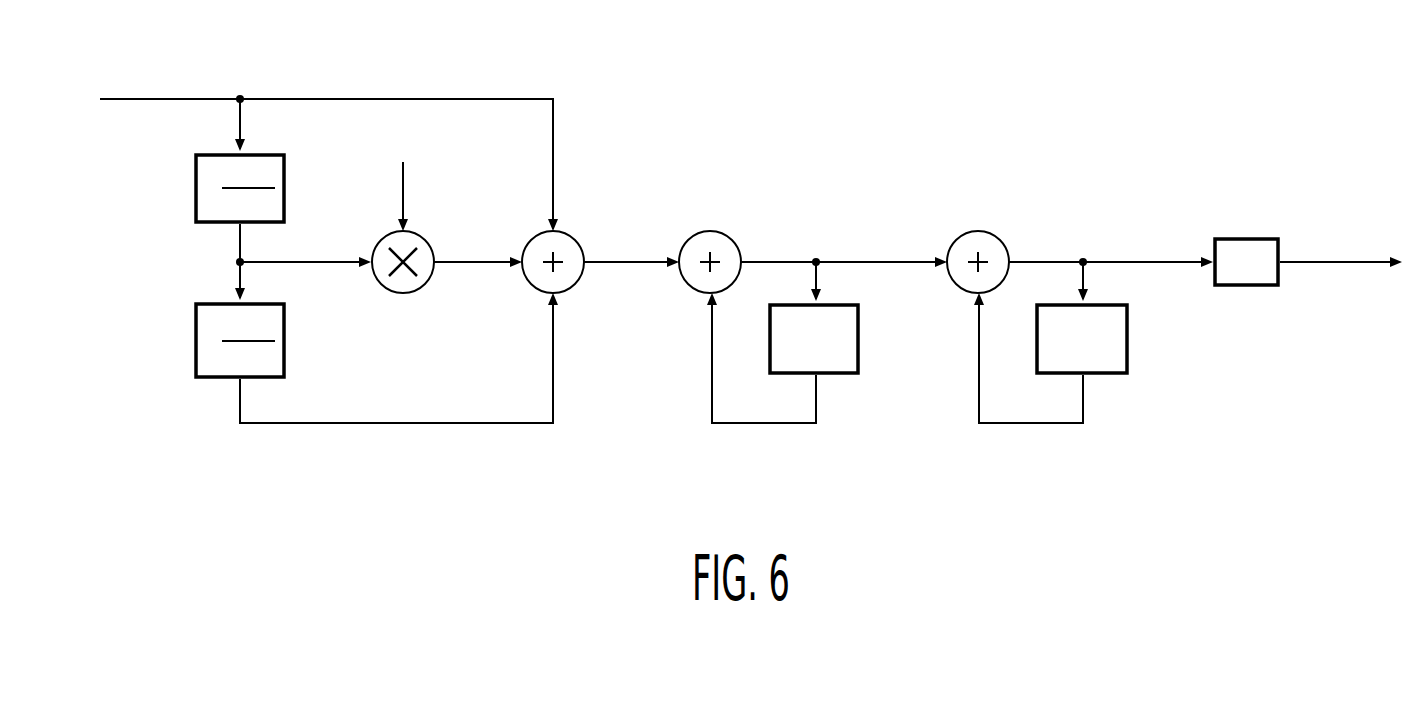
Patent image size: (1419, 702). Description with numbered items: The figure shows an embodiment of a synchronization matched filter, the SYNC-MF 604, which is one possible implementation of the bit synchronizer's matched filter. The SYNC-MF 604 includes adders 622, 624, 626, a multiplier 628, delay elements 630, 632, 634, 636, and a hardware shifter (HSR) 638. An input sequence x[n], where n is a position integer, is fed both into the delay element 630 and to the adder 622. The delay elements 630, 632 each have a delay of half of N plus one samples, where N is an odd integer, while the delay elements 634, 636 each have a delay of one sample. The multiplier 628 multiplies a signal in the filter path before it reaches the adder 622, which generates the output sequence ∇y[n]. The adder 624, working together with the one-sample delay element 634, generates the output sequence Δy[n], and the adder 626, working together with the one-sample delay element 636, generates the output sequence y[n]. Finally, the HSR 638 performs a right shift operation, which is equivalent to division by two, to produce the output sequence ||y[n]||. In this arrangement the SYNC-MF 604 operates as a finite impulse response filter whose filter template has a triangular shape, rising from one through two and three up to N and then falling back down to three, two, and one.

The SYNC-MF 604 is at (862, 41).
The adder 622 is at (575, 286).
The adder 624 is at (731, 237).
The adder 626 is at (999, 235).
The multiplier 628 is at (402, 293).
The delay element 630 is at (190, 184).
The delay element 632 is at (190, 332).
The delay element 634 is at (848, 377).
The delay element 636 is at (1118, 377).
The hardware shifter (HSR) 638 is at (1256, 236).